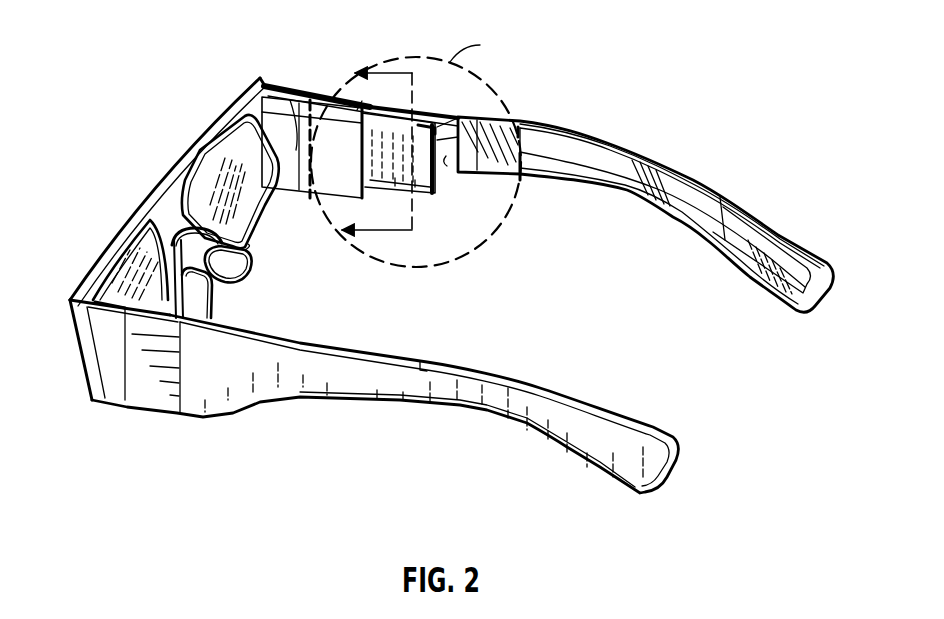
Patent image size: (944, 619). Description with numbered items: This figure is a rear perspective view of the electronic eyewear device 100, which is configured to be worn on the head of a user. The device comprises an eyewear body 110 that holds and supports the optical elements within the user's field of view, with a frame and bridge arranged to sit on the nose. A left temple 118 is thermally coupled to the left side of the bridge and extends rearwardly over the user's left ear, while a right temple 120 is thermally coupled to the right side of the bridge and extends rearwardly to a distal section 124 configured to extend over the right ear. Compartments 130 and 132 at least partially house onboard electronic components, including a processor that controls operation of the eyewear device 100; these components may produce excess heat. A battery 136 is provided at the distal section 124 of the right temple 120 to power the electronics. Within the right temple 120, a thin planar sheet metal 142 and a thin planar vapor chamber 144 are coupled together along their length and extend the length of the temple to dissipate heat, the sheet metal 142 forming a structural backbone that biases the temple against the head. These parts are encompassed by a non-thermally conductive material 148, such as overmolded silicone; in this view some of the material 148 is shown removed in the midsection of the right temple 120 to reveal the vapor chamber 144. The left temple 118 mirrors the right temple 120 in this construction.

The electronic eyewear device 100 is at (163, 46).
The eyewear body 110 is at (168, 170).
The left temple 118 is at (430, 361).
The right temple 120 is at (562, 130).
The distal section 124 is at (757, 265).
The compartment 130 is at (137, 273).
The compartment 132 is at (276, 87).
The battery 136 is at (757, 208).
The sheet metal 142 is at (644, 162).
The vapor chamber 144 is at (568, 173).
The non-thermally conductive material 148 is at (597, 143).